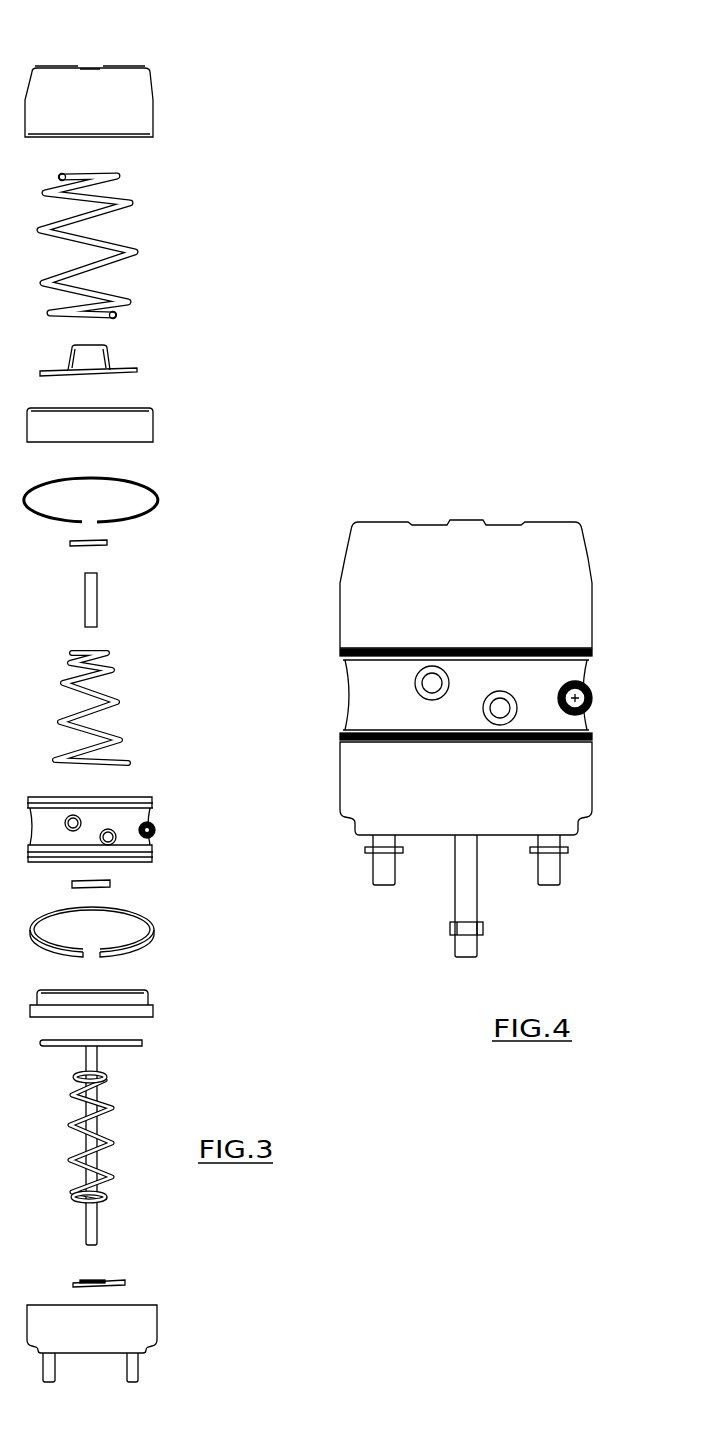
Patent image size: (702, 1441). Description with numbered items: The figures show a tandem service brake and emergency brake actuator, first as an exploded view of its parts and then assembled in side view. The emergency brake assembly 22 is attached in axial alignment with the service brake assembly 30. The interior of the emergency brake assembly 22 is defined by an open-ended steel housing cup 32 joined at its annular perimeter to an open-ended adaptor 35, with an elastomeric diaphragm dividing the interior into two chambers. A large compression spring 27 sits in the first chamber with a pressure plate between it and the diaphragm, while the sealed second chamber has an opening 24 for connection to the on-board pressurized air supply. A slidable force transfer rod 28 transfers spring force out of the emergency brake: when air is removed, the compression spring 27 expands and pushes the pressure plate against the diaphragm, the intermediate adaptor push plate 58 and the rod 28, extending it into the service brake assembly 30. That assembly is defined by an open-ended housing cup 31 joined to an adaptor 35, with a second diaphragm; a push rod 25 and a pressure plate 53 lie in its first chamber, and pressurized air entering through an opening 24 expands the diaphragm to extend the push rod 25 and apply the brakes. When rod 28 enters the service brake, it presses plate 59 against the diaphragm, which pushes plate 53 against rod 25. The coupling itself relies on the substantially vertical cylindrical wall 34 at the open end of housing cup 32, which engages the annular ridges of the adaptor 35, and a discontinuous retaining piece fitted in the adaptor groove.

In FIG. 4, the emergency brake assembly 22 is at (320, 582).
In FIG. 4, the opening 24 is at (446, 680).
In FIG. 3, the push rod 25 is at (92, 1218).
In FIG. 4, the push rod 25 is at (465, 893).
In FIG. 3, the compression spring 27 is at (136, 252).
In FIG. 3, the force transfer rod 28 is at (91, 590).
In FIG. 4, the service brake assembly 30 is at (312, 782).
In FIG. 3, the housing cup 31 is at (130, 1335).
In FIG. 4, the housing cup 31 is at (565, 787).
In FIG. 3, the housing cup 32 is at (133, 83).
In FIG. 4, the housing cup 32 is at (543, 561).
In FIG. 3, the cylindrical wall 34 is at (133, 122).
In FIG. 4, the cylindrical wall 34 is at (582, 635).
In FIG. 3, the adaptor 35 is at (136, 822).
In FIG. 4, the adaptor 35 is at (562, 670).
In FIG. 3, the pressure plate 53 is at (140, 1040).
In FIG. 3, the intermediate adaptor push plate 58 is at (107, 543).
In FIG. 3, the plate 59 is at (110, 881).